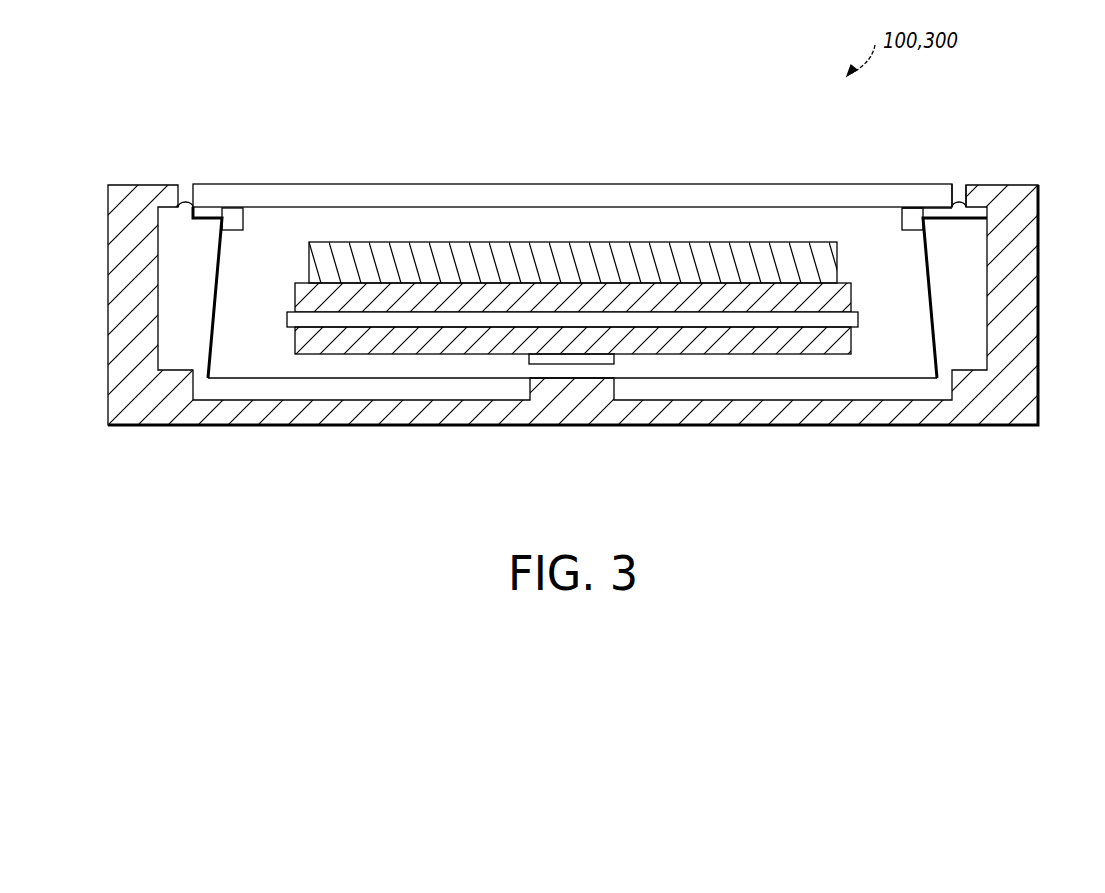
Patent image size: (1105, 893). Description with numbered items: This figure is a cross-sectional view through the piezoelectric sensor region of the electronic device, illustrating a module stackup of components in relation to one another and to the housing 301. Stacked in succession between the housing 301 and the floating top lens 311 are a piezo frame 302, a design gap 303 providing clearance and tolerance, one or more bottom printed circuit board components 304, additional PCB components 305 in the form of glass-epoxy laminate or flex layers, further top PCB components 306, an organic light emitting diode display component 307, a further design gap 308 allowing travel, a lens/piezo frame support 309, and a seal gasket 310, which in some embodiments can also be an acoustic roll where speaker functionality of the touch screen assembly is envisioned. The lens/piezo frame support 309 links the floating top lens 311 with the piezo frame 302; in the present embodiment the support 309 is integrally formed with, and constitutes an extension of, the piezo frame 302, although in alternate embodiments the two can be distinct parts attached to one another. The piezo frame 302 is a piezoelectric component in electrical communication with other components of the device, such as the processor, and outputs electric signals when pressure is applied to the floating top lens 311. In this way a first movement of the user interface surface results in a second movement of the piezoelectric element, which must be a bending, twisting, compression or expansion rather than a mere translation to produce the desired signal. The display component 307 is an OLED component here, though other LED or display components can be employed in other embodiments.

The housing 301 is at (983, 427).
The piezo frame 302 is at (813, 377).
The design gap (clearance/tolerance) 303 is at (895, 360).
The printed circuit board components (Btm) 304 is at (313, 354).
The additional PCB components (FR-4/Flex layers) 305 is at (287, 320).
The further PCB components (top) 306 is at (297, 285).
The organic light emitting diode (OLED) display component 307 is at (307, 250).
The design gap (travel) 308 is at (334, 220).
The lens/piezo frame support 309 is at (987, 213).
The seal gasket 310 is at (978, 203).
The floating top lens 311 is at (928, 198).